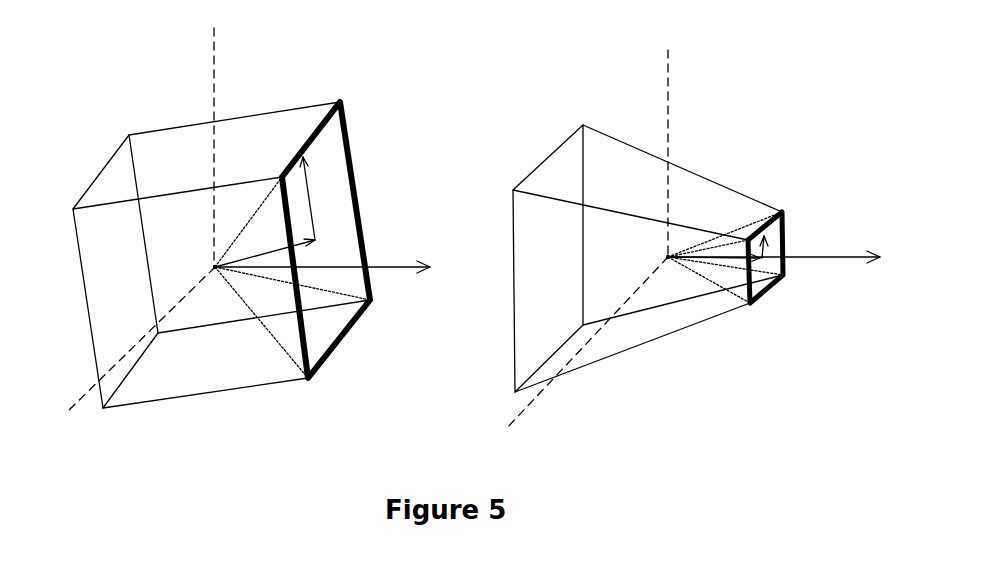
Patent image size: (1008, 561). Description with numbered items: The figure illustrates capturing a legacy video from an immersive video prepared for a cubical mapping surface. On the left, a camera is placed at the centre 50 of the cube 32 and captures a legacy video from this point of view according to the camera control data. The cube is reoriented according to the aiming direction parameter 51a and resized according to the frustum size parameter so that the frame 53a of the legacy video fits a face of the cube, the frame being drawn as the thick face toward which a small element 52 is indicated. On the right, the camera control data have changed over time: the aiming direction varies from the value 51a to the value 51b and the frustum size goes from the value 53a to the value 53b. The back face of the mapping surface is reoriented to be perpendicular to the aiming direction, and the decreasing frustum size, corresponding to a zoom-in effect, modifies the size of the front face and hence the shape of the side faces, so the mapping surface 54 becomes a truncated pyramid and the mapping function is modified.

The cube 32 is at (95, 177).
The centre 50 is at (223, 272).
The aiming direction parameter 51a is at (262, 255).
The aiming direction 51b is at (713, 260).
The pixel / image element 52 is at (310, 205).
The frame 53a is at (347, 125).
The frustum size value 53b is at (785, 228).
The mapping surface 54 is at (547, 157).